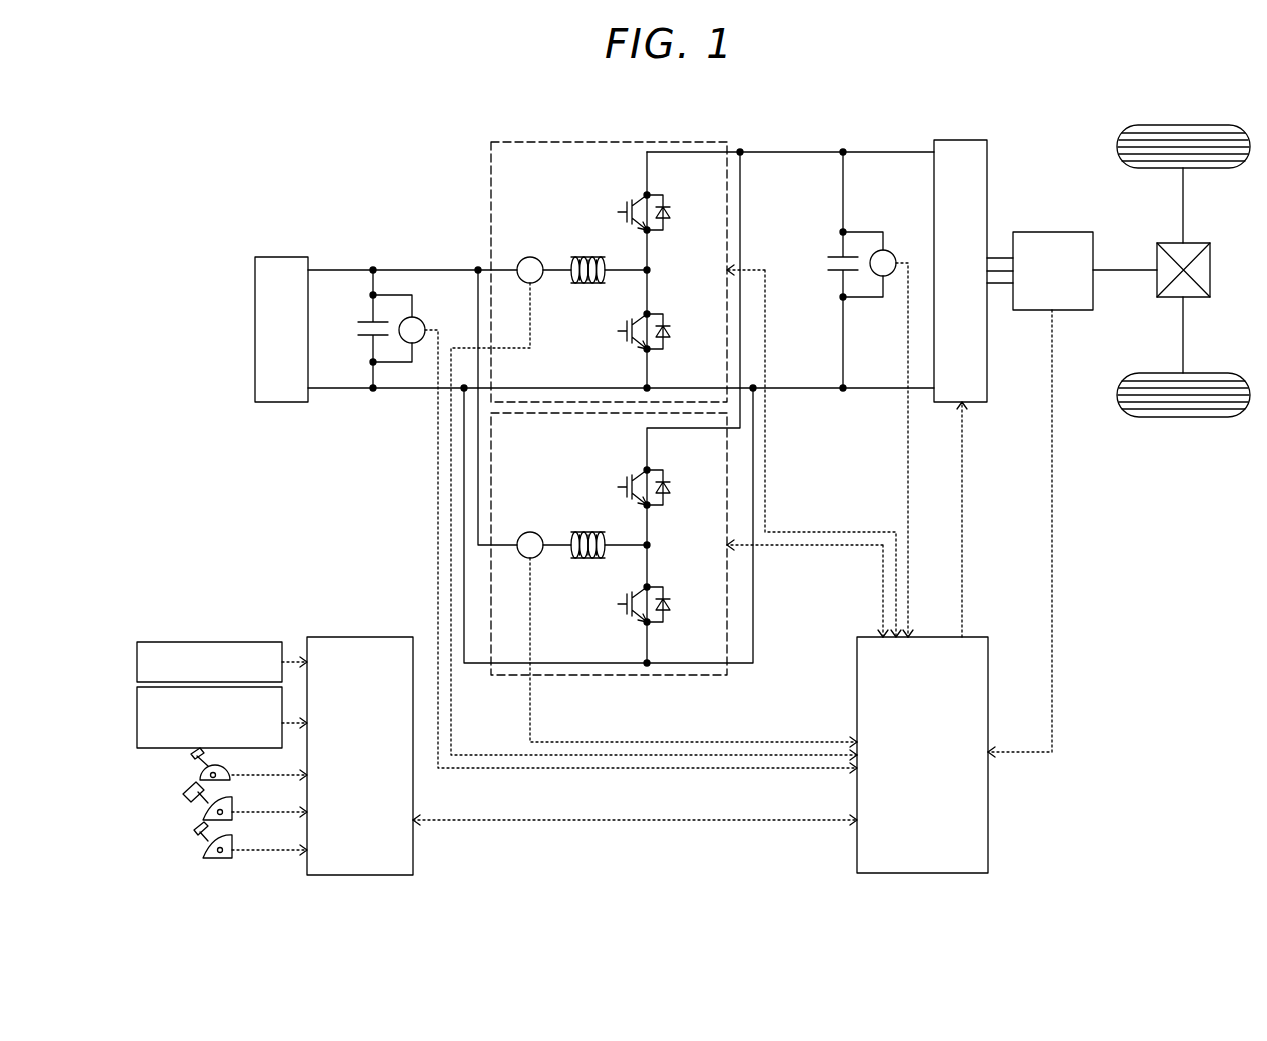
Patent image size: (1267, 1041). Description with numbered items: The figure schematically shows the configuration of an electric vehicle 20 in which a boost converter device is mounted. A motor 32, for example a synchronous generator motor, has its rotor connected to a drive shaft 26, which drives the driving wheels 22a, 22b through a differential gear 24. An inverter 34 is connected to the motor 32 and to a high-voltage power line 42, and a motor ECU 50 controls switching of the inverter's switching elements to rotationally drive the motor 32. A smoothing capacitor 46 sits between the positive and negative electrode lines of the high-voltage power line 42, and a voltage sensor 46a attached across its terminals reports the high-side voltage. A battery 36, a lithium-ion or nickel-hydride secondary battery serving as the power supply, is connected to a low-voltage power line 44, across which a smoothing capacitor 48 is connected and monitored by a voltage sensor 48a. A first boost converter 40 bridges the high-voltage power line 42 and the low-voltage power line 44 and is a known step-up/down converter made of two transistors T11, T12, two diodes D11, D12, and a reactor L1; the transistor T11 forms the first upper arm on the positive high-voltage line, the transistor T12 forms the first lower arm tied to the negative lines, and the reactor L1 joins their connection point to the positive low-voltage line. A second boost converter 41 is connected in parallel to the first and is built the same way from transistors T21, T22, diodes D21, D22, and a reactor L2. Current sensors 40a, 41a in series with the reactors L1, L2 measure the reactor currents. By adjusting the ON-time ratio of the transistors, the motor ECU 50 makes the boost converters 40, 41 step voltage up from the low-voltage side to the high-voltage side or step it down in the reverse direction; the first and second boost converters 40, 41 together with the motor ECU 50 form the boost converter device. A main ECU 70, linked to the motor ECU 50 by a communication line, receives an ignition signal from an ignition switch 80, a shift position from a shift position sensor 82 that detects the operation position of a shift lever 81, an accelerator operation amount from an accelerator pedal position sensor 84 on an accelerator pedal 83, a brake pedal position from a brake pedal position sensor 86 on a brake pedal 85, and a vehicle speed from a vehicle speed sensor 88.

The electric vehicle 20 is at (869, 112).
The driving wheel 22a is at (1183, 125).
The driving wheel 22b is at (1183, 417).
The differential gear 24 is at (1190, 243).
The drive shaft 26 is at (1130, 267).
The motor 32 is at (1053, 232).
The inverter 34 is at (960, 140).
The battery 36 is at (283, 257).
The first boost converter 40 is at (607, 142).
The current sensor 40a is at (530, 257).
The second boost converter 41 is at (620, 676).
The current sensor 41a is at (530, 532).
The high-voltage power line 42 is at (783, 156).
The low-voltage power line 44 is at (333, 276).
The smoothing capacitor 46 is at (840, 255).
The voltage sensor 46a is at (886, 250).
The smoothing capacitor 48 is at (368, 308).
The voltage sensor 48a is at (414, 312).
The motor ECU 50 is at (935, 637).
The main ECU 70 is at (360, 637).
The ignition switch 80 is at (137, 660).
The shift lever 81 is at (195, 758).
The shift position sensor 82 is at (200, 776).
The accelerator pedal 83 is at (184, 794).
The accelerator pedal position sensor 84 is at (205, 812).
The brake pedal 85 is at (196, 834).
The brake pedal position sensor 86 is at (205, 853).
The vehicle speed sensor 88 is at (137, 716).
The transistor T11 is at (632, 205).
The transistor T12 is at (632, 322).
The transistor T21 is at (632, 480).
The transistor T22 is at (632, 597).
The diode D11 is at (668, 207).
The diode D12 is at (668, 326).
The diode D21 is at (668, 482).
The diode D22 is at (668, 599).
The reactor L1 is at (586, 257).
The reactor L2 is at (587, 532).